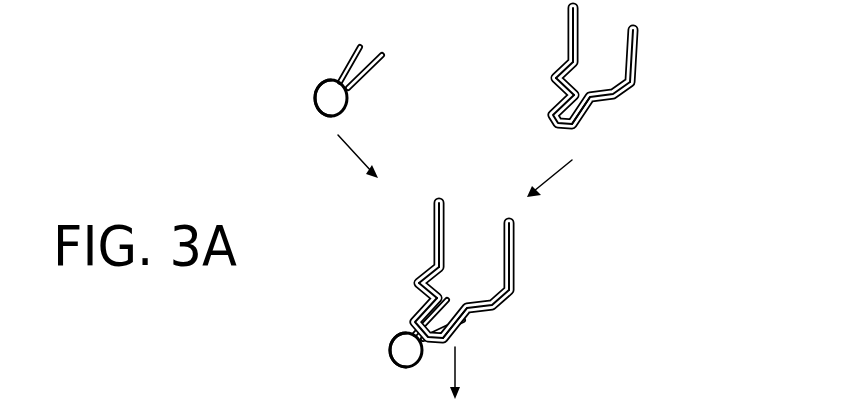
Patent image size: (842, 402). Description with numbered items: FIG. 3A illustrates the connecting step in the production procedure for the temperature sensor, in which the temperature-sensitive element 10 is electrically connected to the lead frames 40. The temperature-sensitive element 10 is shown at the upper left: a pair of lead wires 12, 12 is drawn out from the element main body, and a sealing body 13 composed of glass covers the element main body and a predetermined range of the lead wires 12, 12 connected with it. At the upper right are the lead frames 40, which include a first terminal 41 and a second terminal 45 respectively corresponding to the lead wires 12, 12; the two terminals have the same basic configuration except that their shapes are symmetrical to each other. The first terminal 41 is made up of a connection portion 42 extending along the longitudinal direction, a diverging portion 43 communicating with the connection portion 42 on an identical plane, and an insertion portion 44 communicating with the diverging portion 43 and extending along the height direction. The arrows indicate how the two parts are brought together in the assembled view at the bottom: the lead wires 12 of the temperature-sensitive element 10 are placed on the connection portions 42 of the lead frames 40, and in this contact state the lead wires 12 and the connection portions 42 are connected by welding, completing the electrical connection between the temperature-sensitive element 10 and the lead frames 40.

The temperature-sensitive element 10 is at (354, 108).
The lead wire 12 is at (345, 52).
The sealing body 13 is at (315, 97).
The lead frame 40 is at (652, 37).
The first terminal 41 is at (637, 97).
The connection portion 42 is at (543, 115).
The diverging portion 43 is at (557, 88).
The insertion portion 44 is at (565, 33).
The second terminal 45 is at (560, 67).